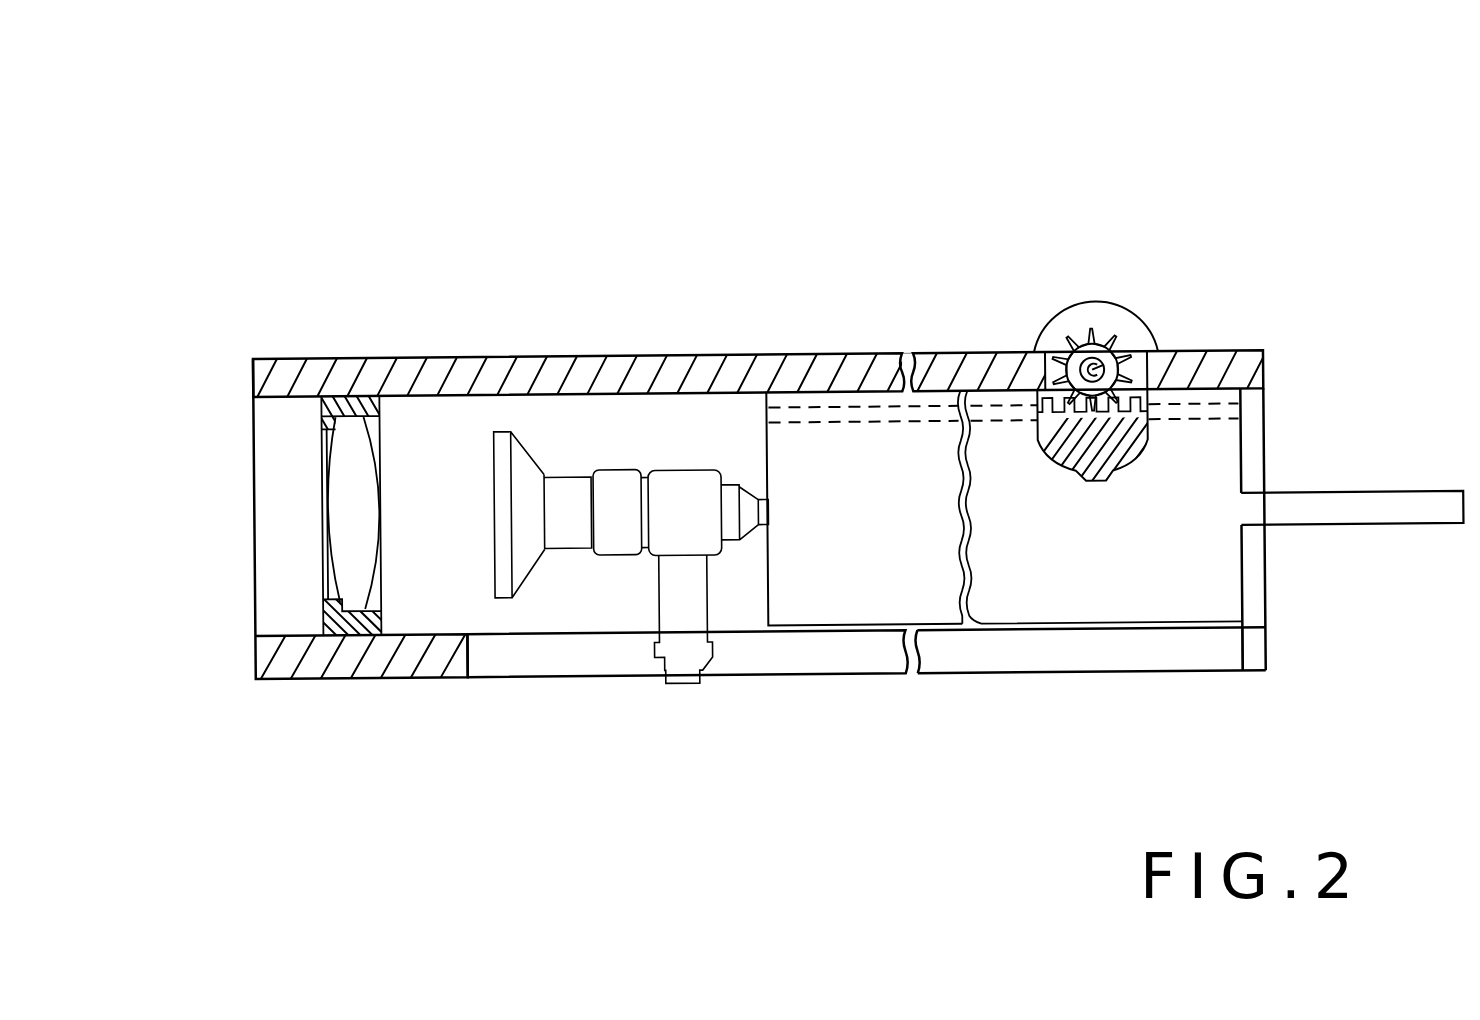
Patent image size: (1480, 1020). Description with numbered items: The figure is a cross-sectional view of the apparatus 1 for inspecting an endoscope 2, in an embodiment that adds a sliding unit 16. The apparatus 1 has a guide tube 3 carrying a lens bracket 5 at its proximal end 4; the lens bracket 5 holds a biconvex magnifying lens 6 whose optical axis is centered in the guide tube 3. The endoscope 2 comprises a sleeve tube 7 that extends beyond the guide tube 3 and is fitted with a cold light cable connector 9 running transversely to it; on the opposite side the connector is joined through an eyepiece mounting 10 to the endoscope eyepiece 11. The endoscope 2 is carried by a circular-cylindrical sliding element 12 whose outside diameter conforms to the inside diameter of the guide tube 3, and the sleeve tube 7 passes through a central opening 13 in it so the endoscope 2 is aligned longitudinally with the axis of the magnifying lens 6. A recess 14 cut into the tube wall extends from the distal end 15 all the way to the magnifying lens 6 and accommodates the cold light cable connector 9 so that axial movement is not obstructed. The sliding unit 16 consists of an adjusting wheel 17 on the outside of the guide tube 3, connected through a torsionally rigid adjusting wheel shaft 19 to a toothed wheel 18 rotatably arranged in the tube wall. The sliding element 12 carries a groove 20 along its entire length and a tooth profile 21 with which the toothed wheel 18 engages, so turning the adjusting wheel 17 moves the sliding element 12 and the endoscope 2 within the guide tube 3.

The apparatus 1 is at (363, 186).
The endoscope 2 is at (602, 446).
The guide tube 3 is at (537, 374).
The proximal end 4 is at (275, 327).
The lens bracket 5 is at (316, 649).
The magnifying lens 6 is at (343, 544).
The sleeve tube 7 is at (1389, 510).
The cold light cable connector 9 is at (698, 607).
The eyepiece mounting 10 is at (612, 535).
The endoscope eyepiece 11 is at (521, 555).
The sliding element 12 is at (802, 455).
The opening 13 is at (1274, 539).
The recess 14 is at (869, 742).
The distal end 15 is at (1291, 219).
The sliding unit 16 is at (1023, 239).
The adjusting wheel 17 is at (1103, 315).
The toothed wheel 18 is at (1108, 357).
The adjusting wheel shaft 19 is at (1098, 375).
The groove 20 is at (903, 414).
The tooth profile 21 is at (1053, 382).